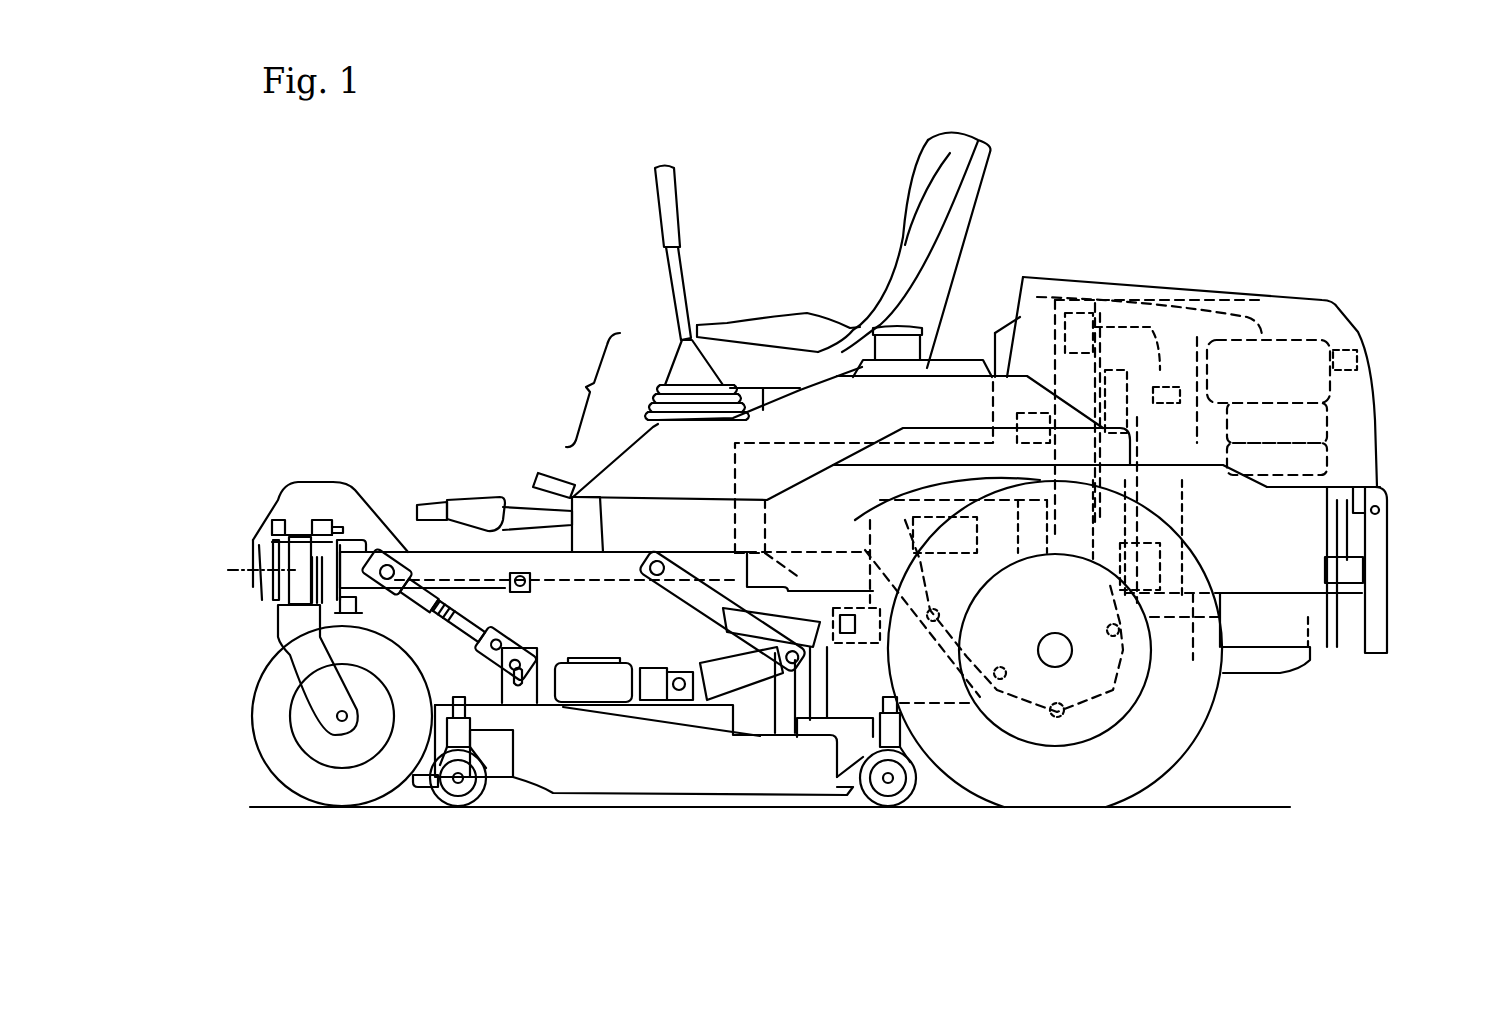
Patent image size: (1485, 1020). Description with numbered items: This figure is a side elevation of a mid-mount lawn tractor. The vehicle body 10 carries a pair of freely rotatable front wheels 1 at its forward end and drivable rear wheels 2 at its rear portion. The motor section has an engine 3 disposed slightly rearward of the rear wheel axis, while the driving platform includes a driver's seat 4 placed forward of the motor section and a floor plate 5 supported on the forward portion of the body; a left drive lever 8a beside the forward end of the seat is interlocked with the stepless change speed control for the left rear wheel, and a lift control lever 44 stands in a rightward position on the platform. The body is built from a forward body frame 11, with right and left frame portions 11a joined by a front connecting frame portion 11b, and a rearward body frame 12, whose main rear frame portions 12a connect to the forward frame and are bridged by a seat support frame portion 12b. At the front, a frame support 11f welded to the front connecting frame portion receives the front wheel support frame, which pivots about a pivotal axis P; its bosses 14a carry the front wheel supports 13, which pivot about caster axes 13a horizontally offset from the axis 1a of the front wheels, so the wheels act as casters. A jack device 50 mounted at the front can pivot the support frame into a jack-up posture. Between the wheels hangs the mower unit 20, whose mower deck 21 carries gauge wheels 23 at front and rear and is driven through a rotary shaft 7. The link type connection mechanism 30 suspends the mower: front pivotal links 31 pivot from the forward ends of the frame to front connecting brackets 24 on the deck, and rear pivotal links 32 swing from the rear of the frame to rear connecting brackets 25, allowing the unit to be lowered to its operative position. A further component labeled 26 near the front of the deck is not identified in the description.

The front wheels 1 is at (262, 763).
The axis of front wheels 1a is at (341, 722).
The rear wheels 2 is at (1185, 748).
The engine 3 is at (1320, 428).
The driver's seat 4 is at (960, 142).
The floor plate 5 is at (373, 528).
The rotary shaft 7 is at (745, 663).
The left drive lever 8a is at (665, 166).
The vehicle body 10 is at (584, 390).
The forward body frame 11 is at (598, 548).
The frame portions 11a is at (572, 587).
The front connecting frame portion 11b is at (347, 535).
The frame support 11f is at (272, 593).
The rearward body frame 12 is at (740, 438).
The main rear frame portions 12a is at (1262, 643).
The seat support frame portion 12b is at (833, 443).
The front wheel support 13 is at (297, 663).
The caster axes 13a is at (303, 547).
The bosses 14a is at (293, 550).
The mower unit 20 is at (581, 798).
The mower deck 21 is at (655, 758).
The gauge wheels 23 is at (458, 806).
The front connecting brackets 24 is at (537, 688).
The rear connecting brackets 25 is at (807, 693).
The front roller 26 is at (405, 790).
The link type connection mechanism 30 is at (465, 630).
The front pivotal links 31 is at (489, 632).
The rear pivotal links 32 is at (697, 613).
The lift control lever 44 is at (480, 497).
The jack device 50 is at (362, 601).
The pivotal axis P is at (249, 570).